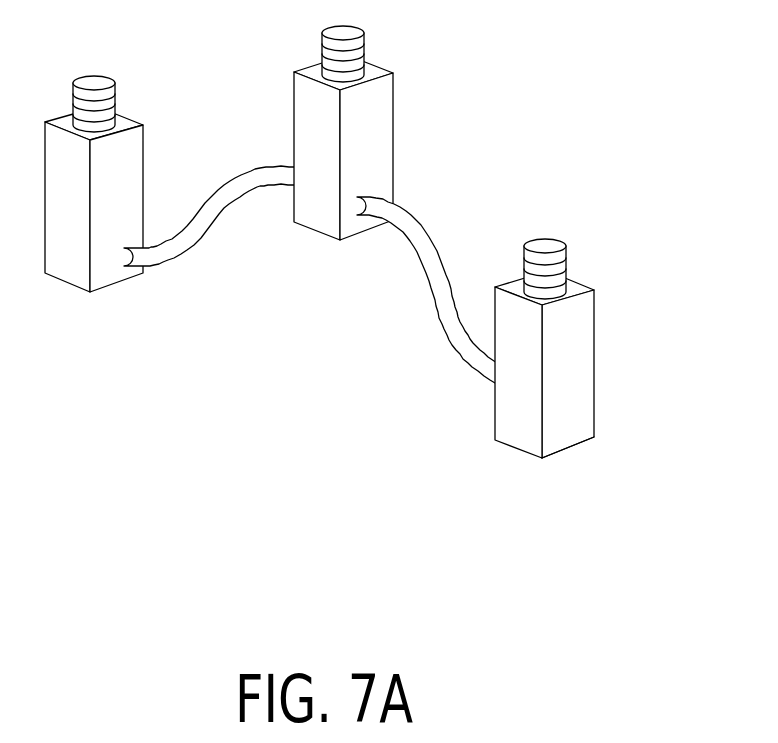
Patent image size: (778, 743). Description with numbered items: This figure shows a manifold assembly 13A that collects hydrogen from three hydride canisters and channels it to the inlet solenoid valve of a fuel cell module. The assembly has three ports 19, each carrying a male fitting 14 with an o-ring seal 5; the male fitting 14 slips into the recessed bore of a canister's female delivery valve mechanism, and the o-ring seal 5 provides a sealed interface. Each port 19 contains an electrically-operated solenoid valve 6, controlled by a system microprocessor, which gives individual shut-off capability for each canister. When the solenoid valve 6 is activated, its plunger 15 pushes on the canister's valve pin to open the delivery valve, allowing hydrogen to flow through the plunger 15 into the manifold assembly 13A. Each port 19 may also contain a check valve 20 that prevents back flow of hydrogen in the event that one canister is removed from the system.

The manifold assembly 13A is at (375, 317).
The male fitting 14 is at (587, 238).
The plunger 15 is at (563, 258).
The o-ring seal 5 is at (565, 287).
The solenoid valve 6 is at (600, 417).
The port 19 is at (505, 418).
The check valve 20 is at (125, 272).